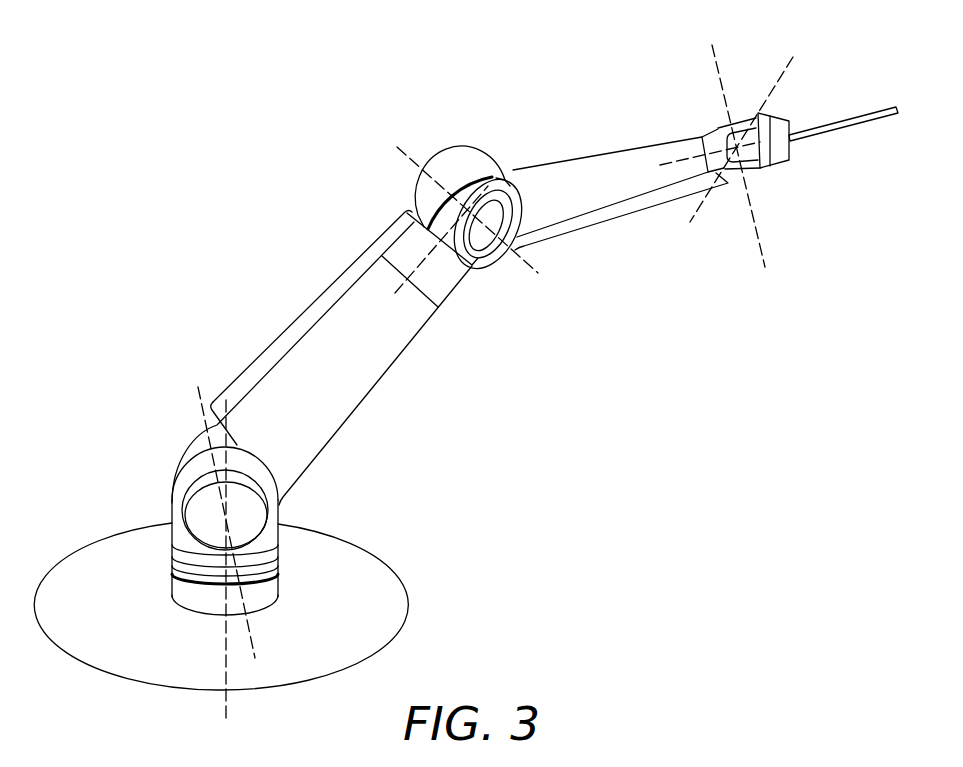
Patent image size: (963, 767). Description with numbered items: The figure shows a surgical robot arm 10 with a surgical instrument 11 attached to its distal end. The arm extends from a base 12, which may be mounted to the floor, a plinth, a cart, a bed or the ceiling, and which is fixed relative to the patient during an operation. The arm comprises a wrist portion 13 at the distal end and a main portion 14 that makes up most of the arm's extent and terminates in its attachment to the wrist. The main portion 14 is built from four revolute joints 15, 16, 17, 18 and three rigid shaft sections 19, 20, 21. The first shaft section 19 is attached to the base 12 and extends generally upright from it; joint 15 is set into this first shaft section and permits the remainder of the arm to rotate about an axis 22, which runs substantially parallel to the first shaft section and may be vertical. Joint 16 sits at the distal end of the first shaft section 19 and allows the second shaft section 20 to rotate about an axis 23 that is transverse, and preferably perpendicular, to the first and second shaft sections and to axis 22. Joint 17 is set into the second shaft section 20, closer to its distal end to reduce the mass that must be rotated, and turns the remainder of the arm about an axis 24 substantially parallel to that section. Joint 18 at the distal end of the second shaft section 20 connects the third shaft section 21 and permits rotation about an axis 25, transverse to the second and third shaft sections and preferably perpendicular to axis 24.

The robot arm 10 is at (454, 311).
The surgical instrument 11 is at (865, 113).
The base 12 is at (376, 562).
The wrist portion 13 is at (755, 66).
The main portion 14 is at (353, 307).
The joint 15 is at (279, 567).
The joint 16 is at (197, 510).
The joint 17 is at (440, 308).
The joint 18 is at (458, 166).
The first shaft section 19 is at (165, 552).
The second shaft section 20 is at (311, 311).
The third shaft section 21 is at (624, 178).
The axis 22 is at (228, 713).
The axis 23 is at (253, 638).
The axis 24 is at (517, 162).
The axis 25 is at (402, 146).